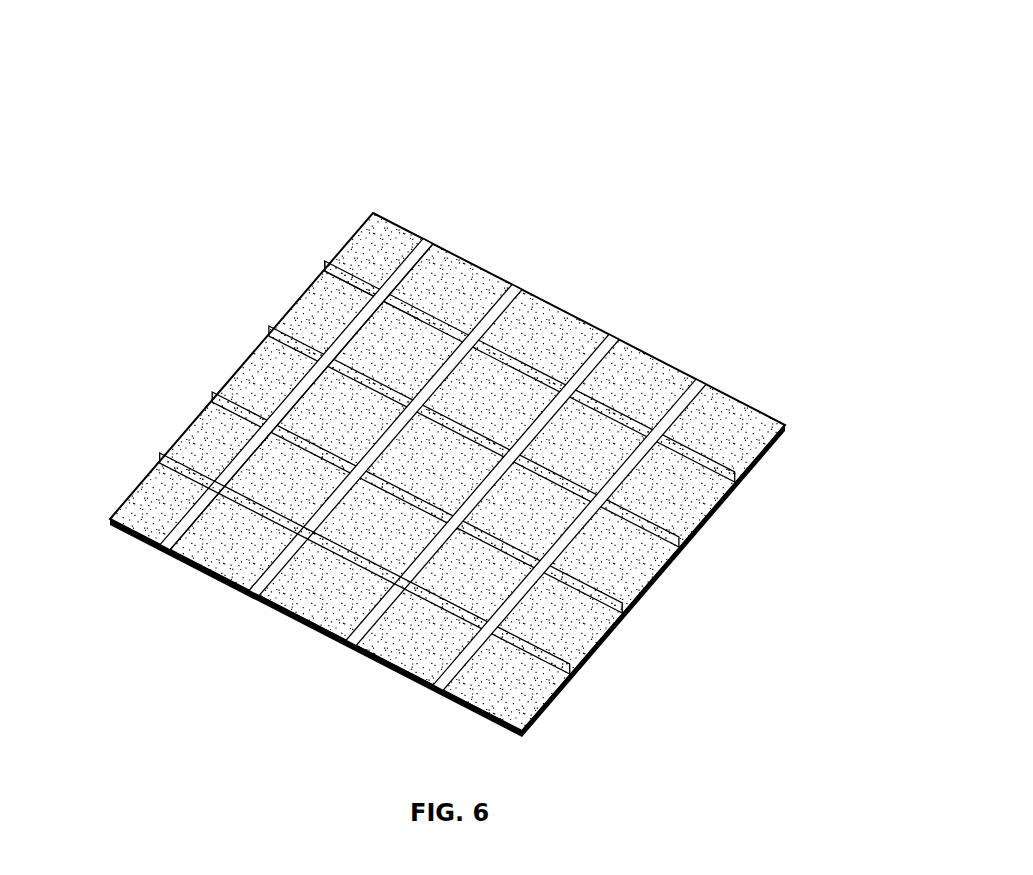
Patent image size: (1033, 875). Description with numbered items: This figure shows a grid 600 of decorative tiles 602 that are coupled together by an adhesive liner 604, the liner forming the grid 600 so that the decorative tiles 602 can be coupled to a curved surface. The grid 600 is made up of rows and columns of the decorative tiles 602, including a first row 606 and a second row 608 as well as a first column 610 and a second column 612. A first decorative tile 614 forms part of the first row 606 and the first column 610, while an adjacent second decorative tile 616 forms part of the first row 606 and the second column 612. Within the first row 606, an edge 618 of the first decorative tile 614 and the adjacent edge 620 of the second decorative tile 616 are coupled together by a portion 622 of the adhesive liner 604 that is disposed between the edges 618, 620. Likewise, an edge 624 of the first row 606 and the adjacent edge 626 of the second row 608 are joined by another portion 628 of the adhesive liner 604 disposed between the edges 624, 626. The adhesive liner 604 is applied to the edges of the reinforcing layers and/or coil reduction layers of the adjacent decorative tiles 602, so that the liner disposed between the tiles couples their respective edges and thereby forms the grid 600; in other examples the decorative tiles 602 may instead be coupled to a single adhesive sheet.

The grid 600 is at (452, 391).
The decorative tiles 602 is at (647, 370).
The adhesive liner 604 is at (701, 389).
The first row 606 is at (784, 469).
The second row 608 is at (735, 534).
The first column 610 is at (120, 553).
The second column 612 is at (203, 593).
The first decorative tile 614 is at (375, 230).
The second decorative tile 616 is at (496, 277).
The edge 618 is at (403, 262).
The edge 620 is at (449, 261).
The portion of the adhesive liner 622 is at (431, 246).
The edge 624 is at (336, 262).
The edge 626 is at (334, 277).
The portion of the adhesive liner 628 is at (326, 267).